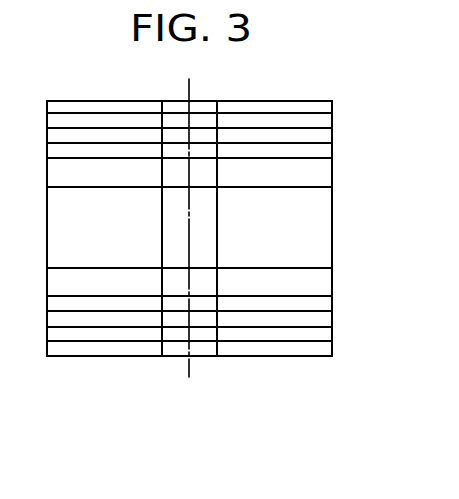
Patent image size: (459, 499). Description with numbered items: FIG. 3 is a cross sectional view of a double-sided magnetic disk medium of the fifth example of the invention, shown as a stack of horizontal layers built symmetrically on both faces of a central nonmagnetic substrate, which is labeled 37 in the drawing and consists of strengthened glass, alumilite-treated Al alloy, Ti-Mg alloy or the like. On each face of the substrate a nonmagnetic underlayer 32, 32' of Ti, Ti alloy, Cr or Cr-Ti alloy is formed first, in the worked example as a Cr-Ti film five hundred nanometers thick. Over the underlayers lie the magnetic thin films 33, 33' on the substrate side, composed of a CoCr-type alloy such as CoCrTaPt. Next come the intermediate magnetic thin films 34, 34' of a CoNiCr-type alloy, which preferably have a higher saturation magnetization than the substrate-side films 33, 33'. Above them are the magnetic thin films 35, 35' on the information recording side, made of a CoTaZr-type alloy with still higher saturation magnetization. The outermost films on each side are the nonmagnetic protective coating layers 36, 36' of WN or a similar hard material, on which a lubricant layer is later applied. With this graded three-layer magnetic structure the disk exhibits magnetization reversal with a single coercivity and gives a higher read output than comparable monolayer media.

The nonmagnetic underlayer 32 is at (230, 196).
The magnetic thin film on the substrate side 33 is at (230, 170).
The intermediate magnetic thin film 34 is at (230, 145).
The magnetic thin film on the information recording side 35 is at (230, 110).
The nonmagnetic protective coating layer 36 is at (230, 81).
The central layer 37 is at (318, 235).
The nonmagnetic underlayer 32' is at (234, 290).
The magnetic thin film on the substrate side 33' is at (234, 323).
The intermediate magnetic thin film 34' is at (234, 351).
The magnetic thin film on the information recording side 35' is at (234, 376).
The nonmagnetic protective coating layer 36' is at (234, 402).